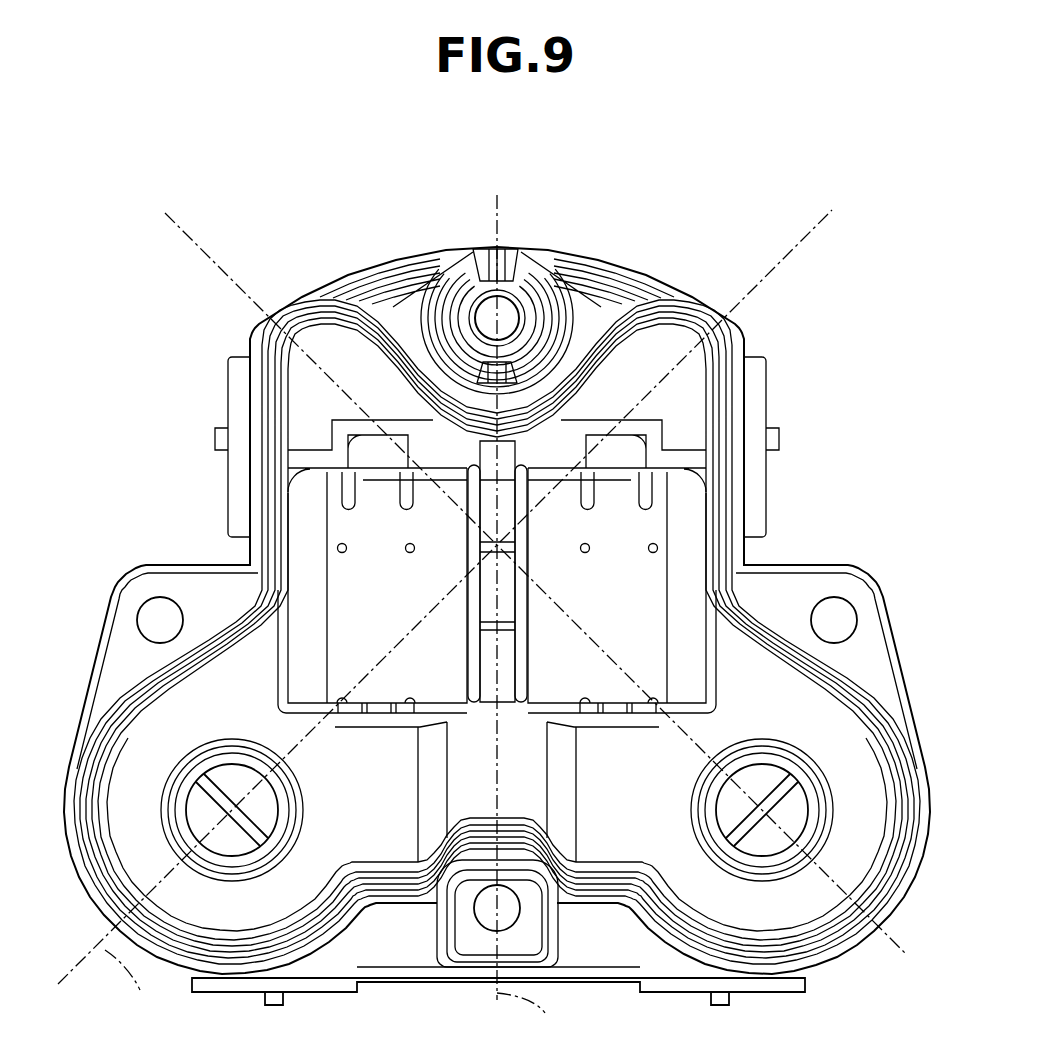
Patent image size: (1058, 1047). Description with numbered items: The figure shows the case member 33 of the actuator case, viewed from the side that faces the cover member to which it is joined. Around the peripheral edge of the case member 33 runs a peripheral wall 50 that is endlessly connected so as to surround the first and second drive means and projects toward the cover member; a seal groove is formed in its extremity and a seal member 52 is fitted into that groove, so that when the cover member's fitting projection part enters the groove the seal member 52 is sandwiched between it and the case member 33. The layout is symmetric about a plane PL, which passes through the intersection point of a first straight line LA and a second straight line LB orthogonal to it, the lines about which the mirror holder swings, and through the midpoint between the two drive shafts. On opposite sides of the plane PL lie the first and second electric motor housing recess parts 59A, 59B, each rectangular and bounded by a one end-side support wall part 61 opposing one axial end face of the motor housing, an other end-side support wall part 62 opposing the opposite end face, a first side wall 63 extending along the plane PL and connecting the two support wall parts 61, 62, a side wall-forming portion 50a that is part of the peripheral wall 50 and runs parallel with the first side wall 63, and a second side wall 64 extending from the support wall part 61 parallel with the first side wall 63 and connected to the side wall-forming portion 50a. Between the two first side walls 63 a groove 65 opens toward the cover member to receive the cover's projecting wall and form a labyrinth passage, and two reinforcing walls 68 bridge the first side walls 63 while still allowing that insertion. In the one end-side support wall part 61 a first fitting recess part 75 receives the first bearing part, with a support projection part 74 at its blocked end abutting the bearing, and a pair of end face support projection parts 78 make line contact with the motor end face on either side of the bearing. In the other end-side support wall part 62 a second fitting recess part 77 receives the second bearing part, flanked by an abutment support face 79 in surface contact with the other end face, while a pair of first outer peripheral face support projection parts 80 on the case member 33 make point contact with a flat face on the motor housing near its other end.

The case member 33 is at (395, 935).
The peripheral wall 50 is at (652, 938).
The side wall-forming portion 50a is at (282, 520).
The seal member 52 is at (703, 308).
The first electric motor housing recess part 59A is at (402, 625).
The second electric motor housing recess part 59B is at (604, 625).
The one end-side support wall part 61 is at (347, 728).
The other end-side support wall part 62 is at (318, 456).
The first side wall 63 is at (472, 532).
The second side wall 64 is at (284, 673).
The groove 65 is at (482, 600).
The reinforcing wall 68 is at (508, 548).
The support projection part 74 is at (380, 712).
The first fitting recess part 75 is at (360, 712).
The second fitting recess part 77 is at (350, 457).
The end face support projection part 78 is at (410, 698).
The abutment support face 79 is at (556, 473).
The first outer peripheral face support projection part 80 is at (345, 552).
The first straight line LA is at (445, 618).
The second straight line LB is at (535, 628).
The plane PL is at (536, 620).